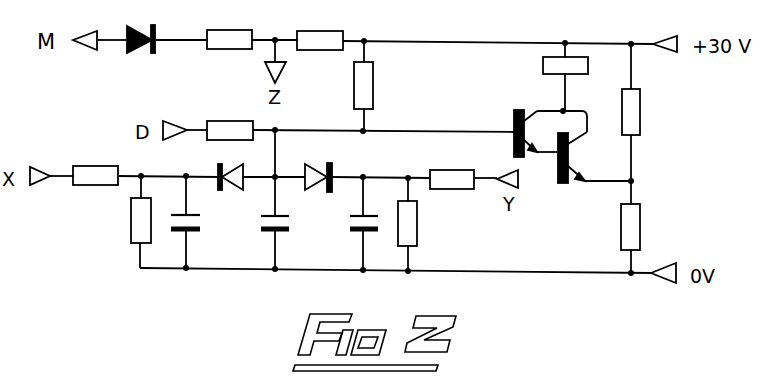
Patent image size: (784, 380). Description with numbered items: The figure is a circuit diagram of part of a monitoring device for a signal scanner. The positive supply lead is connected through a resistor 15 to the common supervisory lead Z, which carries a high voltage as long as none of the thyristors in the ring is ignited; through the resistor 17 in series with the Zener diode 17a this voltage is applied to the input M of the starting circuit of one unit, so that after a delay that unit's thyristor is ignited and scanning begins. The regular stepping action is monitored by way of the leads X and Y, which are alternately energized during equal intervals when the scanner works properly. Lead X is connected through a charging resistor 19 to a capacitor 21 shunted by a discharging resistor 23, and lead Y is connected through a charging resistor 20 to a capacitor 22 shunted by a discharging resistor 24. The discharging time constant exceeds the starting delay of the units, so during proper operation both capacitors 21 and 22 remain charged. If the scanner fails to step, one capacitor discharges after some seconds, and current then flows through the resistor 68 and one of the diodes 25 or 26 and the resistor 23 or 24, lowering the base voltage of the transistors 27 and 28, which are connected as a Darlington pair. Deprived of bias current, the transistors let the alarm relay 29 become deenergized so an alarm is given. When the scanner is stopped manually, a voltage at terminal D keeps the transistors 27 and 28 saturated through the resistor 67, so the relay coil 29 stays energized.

The Zener diode 17a is at (145, 28).
The resistor 17 is at (229, 27).
The resistor 15 is at (320, 28).
The resistor 68 is at (380, 86).
The resistor 67 is at (230, 120).
The alarm relay 29 is at (546, 77).
The transistor 27 is at (535, 133).
The transistor 28 is at (582, 157).
The charging resistor 19 is at (95, 163).
The diode 25 is at (230, 190).
The diode 26 is at (318, 191).
The charging resistor 20 is at (452, 168).
The discharging resistor 23 is at (125, 209).
The capacitor 21 is at (194, 222).
The capacitor 22 is at (358, 223).
The discharging resistor 24 is at (421, 224).